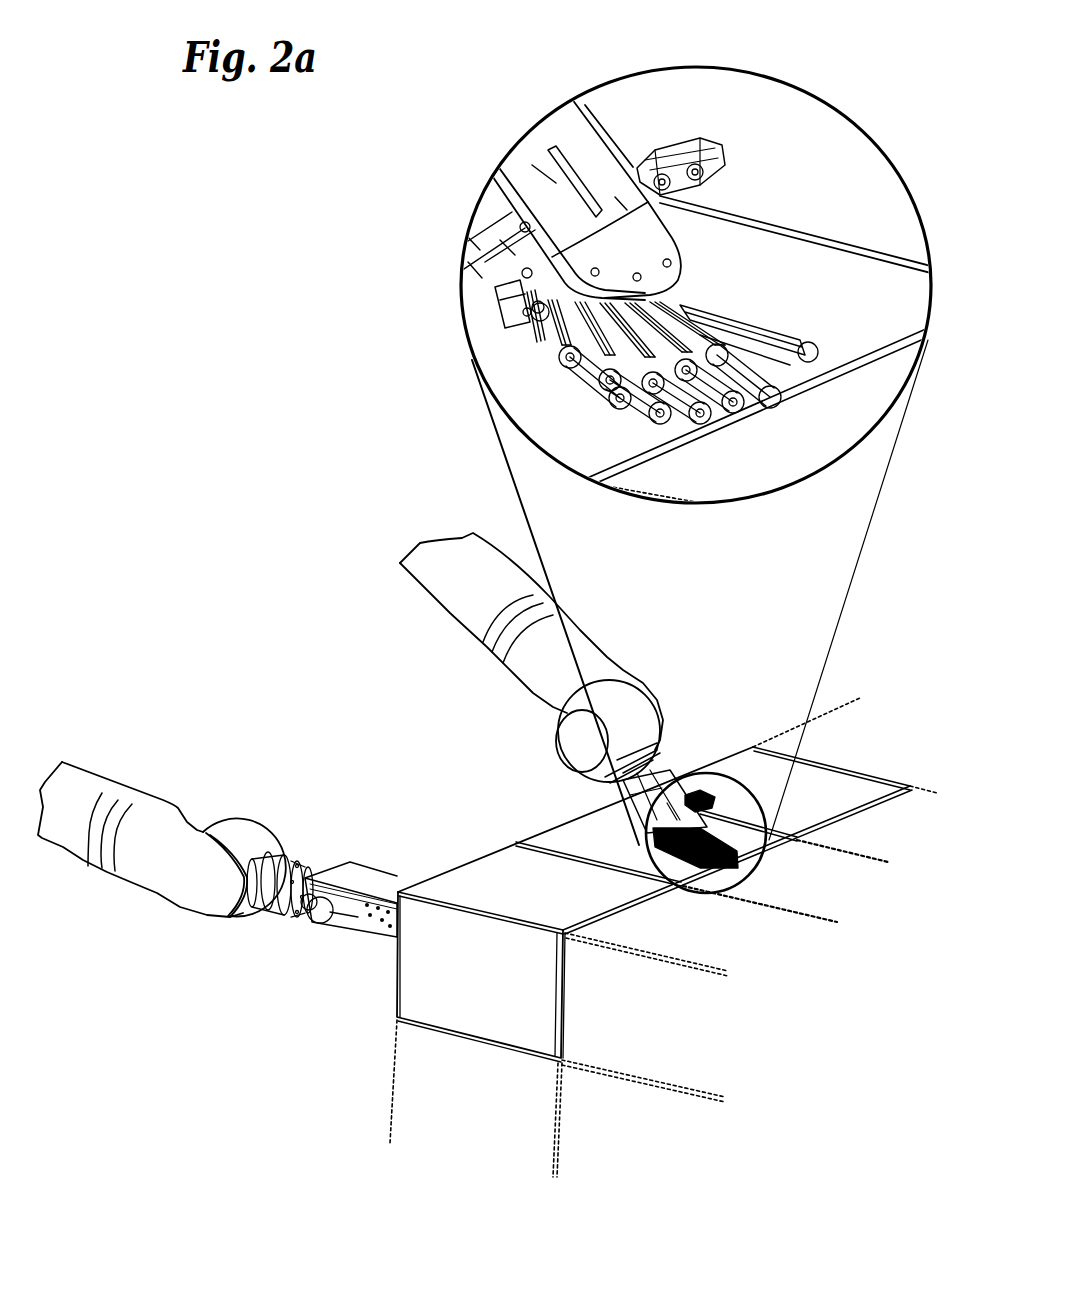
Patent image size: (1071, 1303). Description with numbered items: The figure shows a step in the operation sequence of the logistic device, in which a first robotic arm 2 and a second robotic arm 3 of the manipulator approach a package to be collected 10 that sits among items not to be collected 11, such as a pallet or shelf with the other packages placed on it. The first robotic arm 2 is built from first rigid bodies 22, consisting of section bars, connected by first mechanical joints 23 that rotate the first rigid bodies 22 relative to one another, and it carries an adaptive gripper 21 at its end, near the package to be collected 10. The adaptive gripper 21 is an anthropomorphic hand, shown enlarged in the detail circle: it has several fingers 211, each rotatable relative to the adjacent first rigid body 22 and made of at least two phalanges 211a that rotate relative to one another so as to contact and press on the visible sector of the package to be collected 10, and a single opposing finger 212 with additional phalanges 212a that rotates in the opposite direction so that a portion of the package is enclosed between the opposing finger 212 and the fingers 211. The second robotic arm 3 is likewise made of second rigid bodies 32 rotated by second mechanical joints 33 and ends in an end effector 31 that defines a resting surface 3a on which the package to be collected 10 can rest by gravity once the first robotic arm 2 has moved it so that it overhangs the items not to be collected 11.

The first robotic arm 2 is at (667, 582).
The first rigid bodies 22 is at (415, 577).
The first mechanical joints 23 is at (630, 663).
The adaptive gripper 21 is at (688, 759).
The opposing finger 212 is at (645, 121).
The additional phalanges 212a is at (728, 178).
The finger 211 is at (783, 313).
The phalanges 211a is at (585, 380).
The package to be collected 10 is at (540, 817).
The item not to be collected 11 is at (840, 773).
The second robotic arm 3 is at (140, 945).
The second rigid bodies 32 is at (97, 773).
The second mechanical joints 33 is at (233, 812).
The end effector 31 is at (300, 940).
The resting surface 3a is at (363, 880).